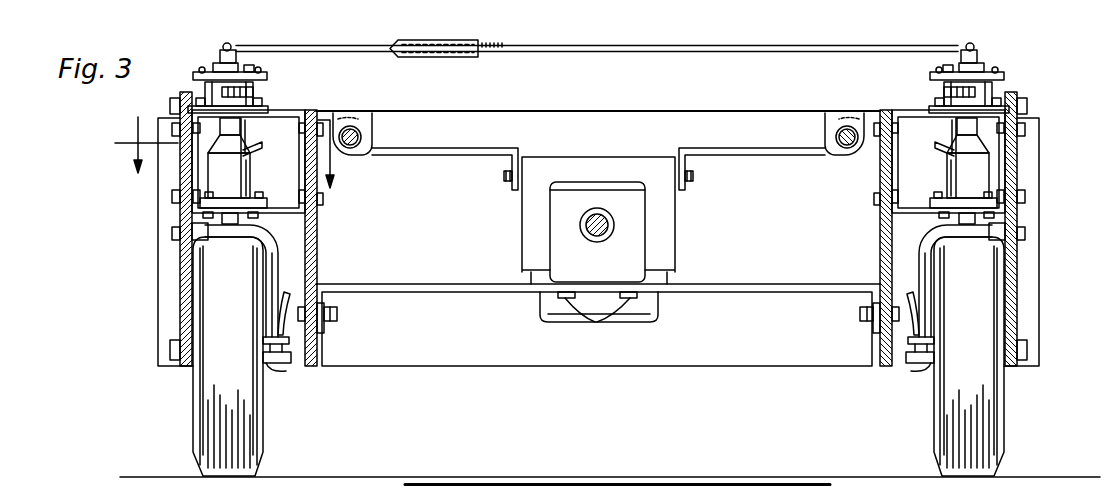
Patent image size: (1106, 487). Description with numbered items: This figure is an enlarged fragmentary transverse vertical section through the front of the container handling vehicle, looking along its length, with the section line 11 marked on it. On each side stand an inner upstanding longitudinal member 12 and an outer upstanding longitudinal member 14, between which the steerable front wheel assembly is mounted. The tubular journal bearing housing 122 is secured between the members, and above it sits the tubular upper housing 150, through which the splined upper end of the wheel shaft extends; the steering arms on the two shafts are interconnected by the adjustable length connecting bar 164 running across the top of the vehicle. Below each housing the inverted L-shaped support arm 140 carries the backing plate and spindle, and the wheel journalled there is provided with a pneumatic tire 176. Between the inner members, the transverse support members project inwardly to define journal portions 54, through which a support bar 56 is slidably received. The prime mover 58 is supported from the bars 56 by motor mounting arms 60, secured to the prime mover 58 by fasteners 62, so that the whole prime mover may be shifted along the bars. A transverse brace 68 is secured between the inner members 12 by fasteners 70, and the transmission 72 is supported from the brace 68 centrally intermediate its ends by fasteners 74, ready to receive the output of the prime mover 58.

The section line 11- 11 is at (235, 163).
The inner upstanding longitudinal member 12 is at (310, 270).
The outer upstanding longitudinal member 14 is at (190, 309).
The journal portion 54 is at (374, 135).
The support bar 56 is at (835, 153).
The prime mover 58 is at (684, 231).
The motor mounting arm 60 is at (486, 149).
The fastener 62 is at (504, 176).
The transverse brace 68 is at (440, 288).
The fastener 70 is at (334, 314).
The transmission 72 is at (658, 257).
The fastener 74 is at (594, 319).
The tubular journal bearing housing 122 is at (196, 170).
The L-shaped support arm 140 is at (277, 252).
The tubular upper housing 150 is at (266, 96).
The adjustable length connecting bar 164 is at (641, 53).
The pneumatic tire 176 is at (243, 417).